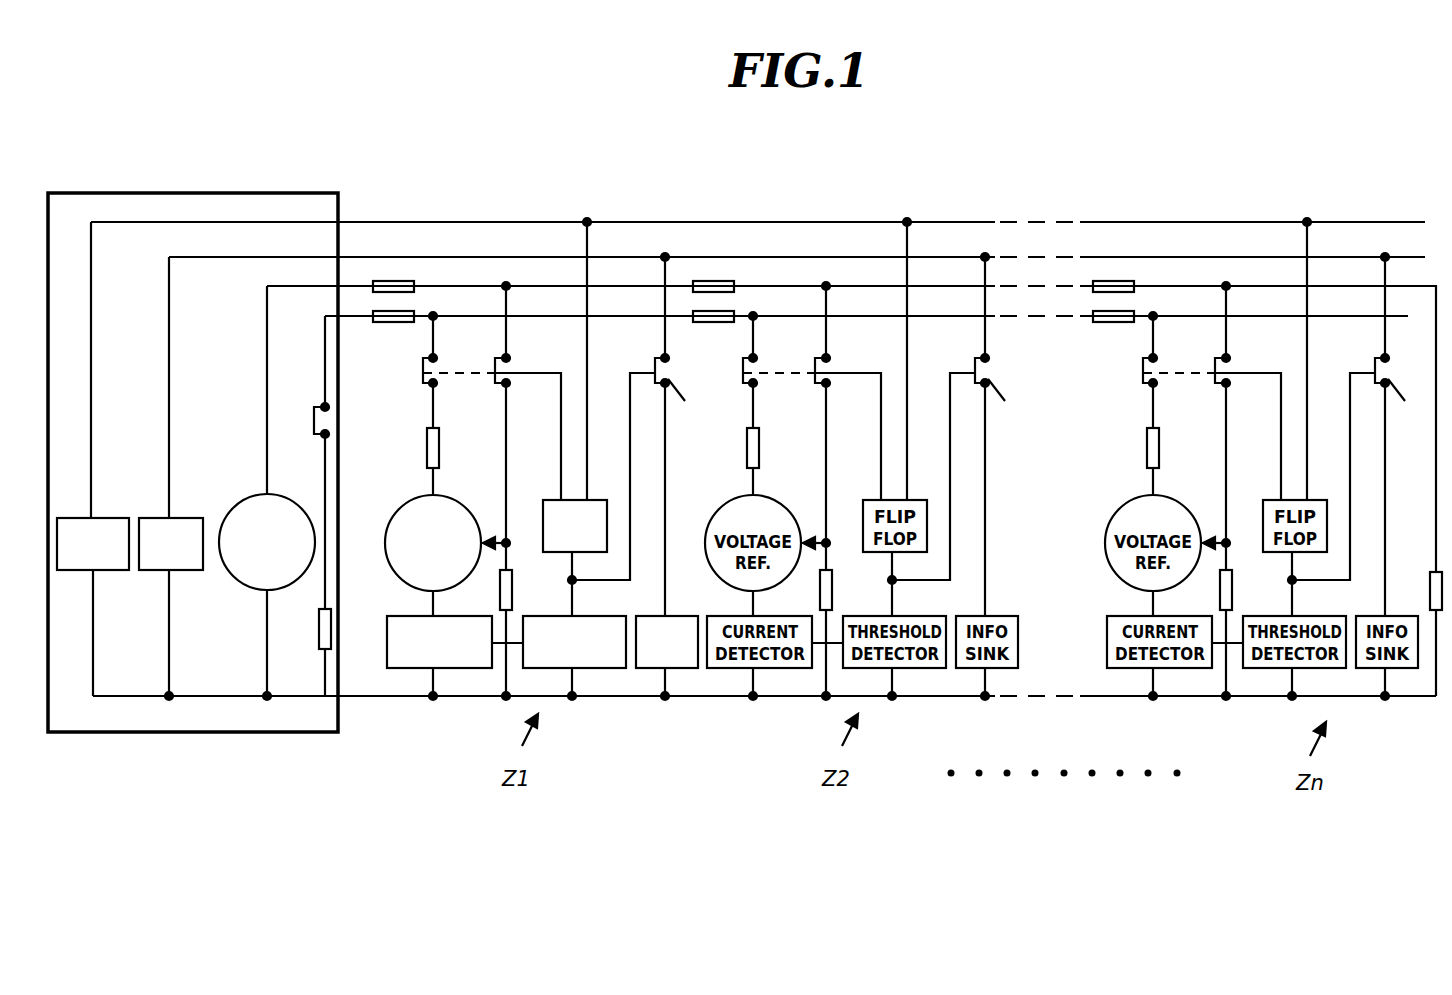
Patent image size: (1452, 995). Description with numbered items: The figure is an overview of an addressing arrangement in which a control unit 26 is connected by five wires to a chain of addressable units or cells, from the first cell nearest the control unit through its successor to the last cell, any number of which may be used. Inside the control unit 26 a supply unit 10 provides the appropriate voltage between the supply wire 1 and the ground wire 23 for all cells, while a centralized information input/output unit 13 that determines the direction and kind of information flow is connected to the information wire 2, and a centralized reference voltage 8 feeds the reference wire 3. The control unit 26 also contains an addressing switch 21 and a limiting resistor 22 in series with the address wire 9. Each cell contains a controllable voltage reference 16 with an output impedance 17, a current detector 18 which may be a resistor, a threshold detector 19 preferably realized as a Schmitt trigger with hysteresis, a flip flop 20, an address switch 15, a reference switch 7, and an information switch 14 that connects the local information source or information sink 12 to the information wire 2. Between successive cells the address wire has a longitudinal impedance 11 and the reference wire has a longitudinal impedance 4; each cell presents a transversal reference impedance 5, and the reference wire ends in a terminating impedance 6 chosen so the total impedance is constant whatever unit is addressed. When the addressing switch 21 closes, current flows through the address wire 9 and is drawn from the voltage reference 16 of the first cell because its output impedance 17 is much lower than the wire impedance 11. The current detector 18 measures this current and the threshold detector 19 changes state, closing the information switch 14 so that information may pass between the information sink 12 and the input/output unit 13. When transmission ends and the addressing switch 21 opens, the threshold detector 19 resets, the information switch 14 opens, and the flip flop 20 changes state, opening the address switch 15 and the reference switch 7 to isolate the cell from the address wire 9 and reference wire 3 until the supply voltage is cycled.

The supply wire 1 is at (808, 221).
The information wire 2 is at (1410, 257).
The reference wire 3 is at (1432, 368).
The longitudinal impedance 4 is at (378, 285).
The transversal reference impedance 5 is at (500, 587).
The terminating impedance 6 is at (1427, 577).
The reference switch 7 is at (494, 386).
The centralized reference voltage 8 is at (256, 495).
The address wire 9 is at (1018, 318).
The supply unit 10 is at (99, 517).
The longitudinal impedance of the address wire 11 is at (390, 324).
The information sink 12 is at (655, 672).
The input/output unit 13 is at (173, 517).
The information switch 14 is at (681, 339).
The address switch 15 is at (423, 386).
The voltage reference 16 is at (463, 496).
The output impedance 17 is at (426, 448).
The current detector 18 is at (449, 672).
The threshold detector 19 is at (538, 669).
The flip flop 20 is at (553, 497).
The addressing switch 21 is at (312, 413).
The limiting resistor 22 is at (319, 629).
The ground wire 23 is at (1062, 694).
The control unit 26 is at (256, 191).